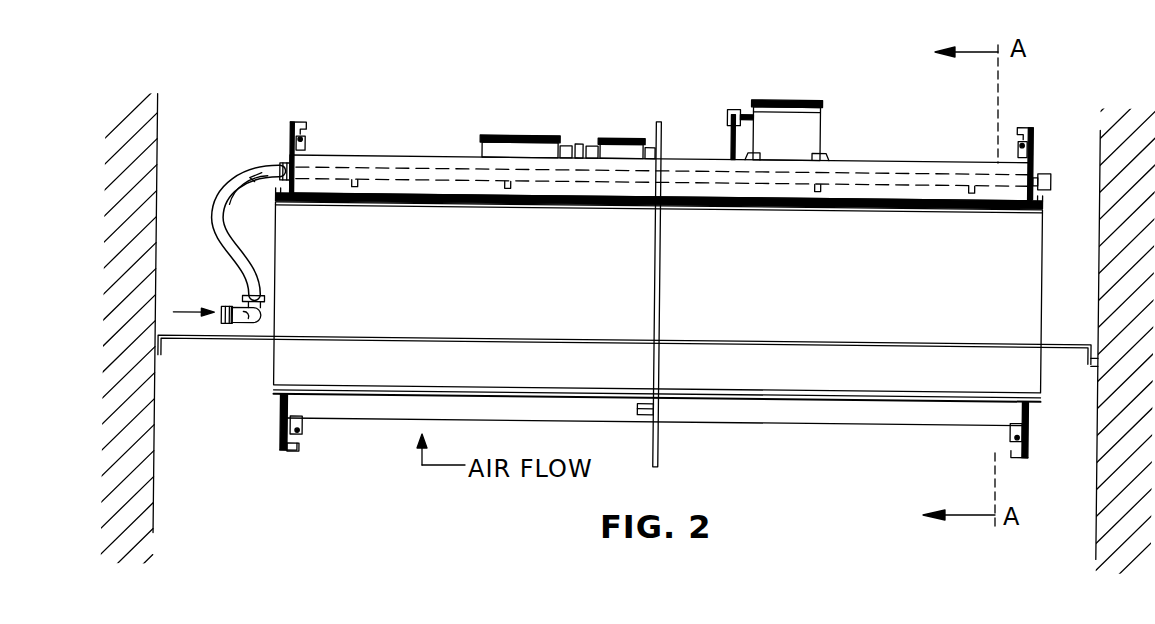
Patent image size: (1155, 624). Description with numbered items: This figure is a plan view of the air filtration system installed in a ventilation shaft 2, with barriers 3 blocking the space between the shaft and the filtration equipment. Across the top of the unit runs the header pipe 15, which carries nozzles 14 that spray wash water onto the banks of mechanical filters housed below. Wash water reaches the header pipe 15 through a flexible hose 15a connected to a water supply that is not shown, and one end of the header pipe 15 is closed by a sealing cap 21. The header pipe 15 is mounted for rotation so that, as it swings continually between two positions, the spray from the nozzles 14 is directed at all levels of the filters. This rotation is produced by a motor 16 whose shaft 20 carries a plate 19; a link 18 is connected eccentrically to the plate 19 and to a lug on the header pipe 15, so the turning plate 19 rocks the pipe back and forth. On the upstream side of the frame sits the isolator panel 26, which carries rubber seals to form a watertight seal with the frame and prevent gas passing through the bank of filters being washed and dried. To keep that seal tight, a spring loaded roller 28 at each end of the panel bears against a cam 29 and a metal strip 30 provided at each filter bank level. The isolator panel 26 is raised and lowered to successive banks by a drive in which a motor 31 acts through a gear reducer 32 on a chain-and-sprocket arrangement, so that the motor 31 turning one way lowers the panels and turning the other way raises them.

The ventilation shaft 2 is at (130, 320).
The barriers 3 is at (212, 342).
The nozzle 14 is at (976, 193).
The header pipe 15 is at (872, 176).
The flexible hose 15a is at (233, 174).
The motor 16 is at (806, 130).
The link 18 is at (731, 155).
The plate 19 is at (733, 105).
The shaft 20 is at (748, 110).
The sealing cap 21 is at (1052, 181).
The isolator panel 26 is at (826, 420).
The spring loaded roller 28 is at (306, 143).
The cam 29 is at (301, 449).
The metal strip 30 is at (297, 122).
The motor 31 is at (611, 140).
The gear reducer 32 is at (495, 142).